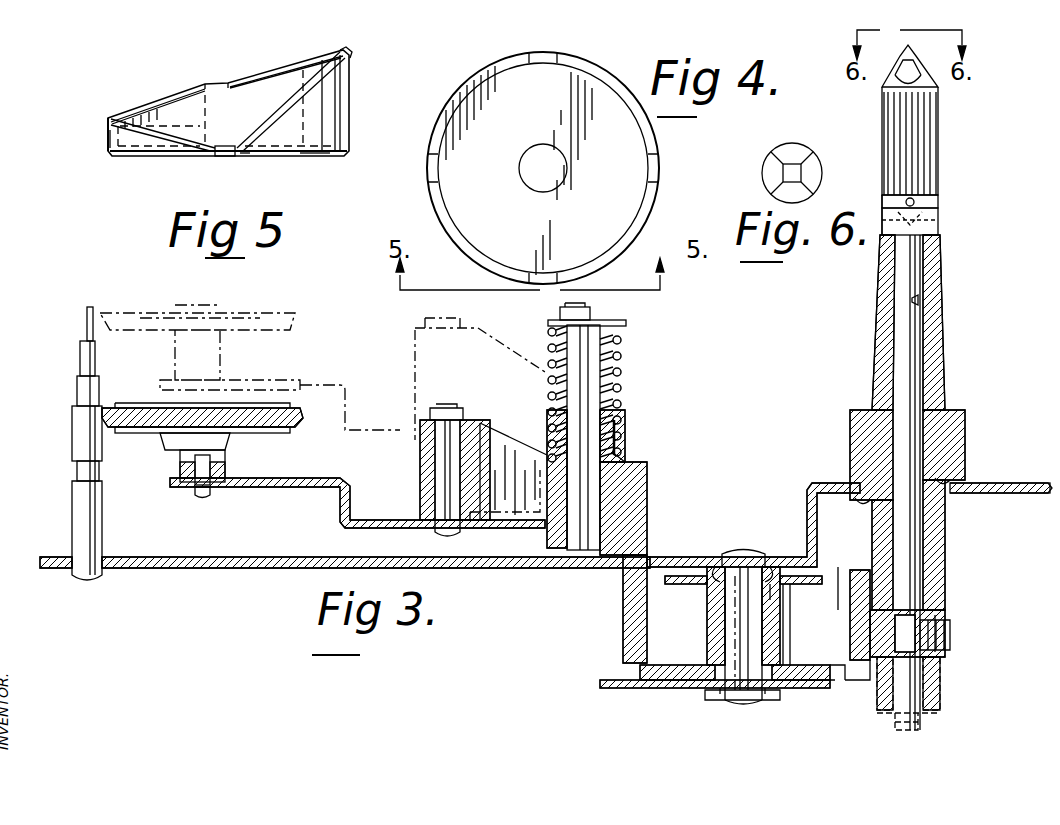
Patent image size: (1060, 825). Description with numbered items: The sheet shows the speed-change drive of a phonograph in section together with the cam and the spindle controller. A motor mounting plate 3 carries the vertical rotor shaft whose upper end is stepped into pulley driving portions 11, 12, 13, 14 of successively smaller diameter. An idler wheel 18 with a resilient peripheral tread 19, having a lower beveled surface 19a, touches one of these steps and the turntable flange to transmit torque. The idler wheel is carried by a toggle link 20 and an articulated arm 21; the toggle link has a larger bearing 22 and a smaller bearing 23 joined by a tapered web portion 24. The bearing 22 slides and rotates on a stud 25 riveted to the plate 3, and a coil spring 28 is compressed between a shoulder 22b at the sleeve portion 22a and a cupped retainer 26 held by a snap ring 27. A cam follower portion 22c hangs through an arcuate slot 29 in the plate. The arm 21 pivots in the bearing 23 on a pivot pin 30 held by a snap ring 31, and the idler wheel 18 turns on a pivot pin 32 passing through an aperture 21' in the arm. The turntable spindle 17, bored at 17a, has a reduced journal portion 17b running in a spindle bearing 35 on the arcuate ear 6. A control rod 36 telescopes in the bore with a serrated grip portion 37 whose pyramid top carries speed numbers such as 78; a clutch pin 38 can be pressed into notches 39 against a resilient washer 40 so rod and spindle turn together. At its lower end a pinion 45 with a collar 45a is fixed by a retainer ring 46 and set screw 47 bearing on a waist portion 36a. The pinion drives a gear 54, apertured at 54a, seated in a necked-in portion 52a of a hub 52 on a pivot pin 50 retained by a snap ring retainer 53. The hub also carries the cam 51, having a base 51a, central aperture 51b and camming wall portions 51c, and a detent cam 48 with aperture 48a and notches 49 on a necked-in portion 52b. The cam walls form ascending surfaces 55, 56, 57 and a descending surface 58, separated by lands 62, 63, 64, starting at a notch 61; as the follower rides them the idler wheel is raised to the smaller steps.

In FIG. 3, the motor mounting plate 3 is at (292, 568).
In FIG. 3, the arcuate ear 6 is at (998, 482).
In FIG. 3, the pulley driving portion 11 is at (72, 420).
In FIG. 3, the pulley driving portion 12 is at (77, 385).
In FIG. 3, the pulley driving portion 13 is at (80, 350).
In FIG. 3, the pulley driving portion 14 is at (87, 312).
In FIG. 3, the turntable spindle 17 is at (946, 330).
In FIG. 3, the bore 17a is at (918, 302).
In FIG. 3, the journal portion 17b is at (940, 450).
In FIG. 3, the idler wheel 18 is at (270, 436).
In FIG. 3, the resilient peripheral tread 19 is at (297, 418).
In FIG. 3, the beveled surface 19a is at (120, 430).
In FIG. 3, the toggle link 20 is at (648, 480).
In FIG. 3, the articulated arm 21 is at (357, 503).
In FIG. 3, the aperture 21' is at (202, 503).
In FIG. 3, the bearing 22 is at (625, 428).
In FIG. 3, the sleeve portion 22a is at (618, 420).
In FIG. 3, the shoulder 22b is at (620, 458).
In FIG. 3, the cam follower portion 22c is at (623, 610).
In FIG. 3, the bearing 23 is at (420, 460).
In FIG. 3, the web portion 24 is at (500, 450).
In FIG. 3, the stud 25 is at (590, 390).
In FIG. 3, the retainer 26 is at (626, 323).
In FIG. 3, the snap ring 27 is at (595, 315).
In FIG. 3, the coil spring 28 is at (622, 360).
In FIG. 3, the arcuate slot 29 is at (652, 557).
In FIG. 3, the pivot pin 30 is at (440, 486).
In FIG. 3, the snap ring 31 is at (432, 410).
In FIG. 3, the pivot pin 32 is at (180, 470).
In FIG. 3, the spindle bearing 35 is at (955, 405).
In FIG. 3, the control rod 36 is at (903, 315).
In FIG. 3, the reduced waist portion 36a is at (905, 635).
In FIG. 3, the grip portion 37 is at (925, 140).
In FIG. 3, the clutch pin 38 is at (938, 200).
In FIG. 3, the notches 39 is at (932, 225).
In FIG. 3, the resilient washer 40 is at (880, 215).
In FIG. 3, the pinion 45 is at (935, 680).
In FIG. 3, the collar 45a is at (860, 568).
In FIG. 3, the retainer ring 46 is at (945, 615).
In FIG. 3, the set screw 47 is at (955, 625).
In FIG. 3, the detent cam 48 is at (786, 600).
In FIG. 3, the aperture 48a is at (772, 576).
In FIG. 3, the peripheral notches 49 is at (680, 585).
In FIG. 3, the pivot pin 50 is at (742, 700).
In FIG. 5, the cam 51 is at (352, 92).
In FIG. 4, the cam 51 is at (540, 275).
In FIG. 3, the cam 51 is at (800, 690).
In FIG. 5, the base 51a is at (308, 156).
In FIG. 3, the base 51a is at (690, 665).
In FIG. 5, the aperture 51b is at (242, 156).
In FIG. 3, the aperture 51b is at (738, 675).
In FIG. 5, the camming wall portions 51c is at (108, 135).
In FIG. 3, the camming wall portions 51c is at (860, 662).
In FIG. 3, the hub 52 is at (707, 614).
In FIG. 3, the necked-in portion 52a is at (795, 665).
In FIG. 3, the necked-in portion 52b is at (705, 567).
In FIG. 3, the snap ring retainer 53 is at (712, 698).
In FIG. 3, the gear 54 is at (650, 688).
In FIG. 3, the aperture 54a is at (735, 700).
In FIG. 5, the cam surface 55 is at (168, 130).
In FIG. 4, the cam surface 55 is at (465, 250).
In FIG. 5, the cam surface 56 is at (155, 100).
In FIG. 4, the cam surface 56 is at (500, 60).
In FIG. 5, the cam surface 57 is at (262, 70).
In FIG. 4, the cam surface 57 is at (615, 82).
In FIG. 5, the cam surface 58 is at (305, 95).
In FIG. 4, the cam surface 58 is at (652, 218).
In FIG. 5, the notch 61 is at (222, 156).
In FIG. 5, the land surface 62 is at (110, 118).
In FIG. 4, the land surface 62 is at (427, 172).
In FIG. 5, the land 63 is at (220, 82).
In FIG. 4, the land 63 is at (542, 53).
In FIG. 5, the land 64 is at (346, 50).
In FIG. 4, the land 64 is at (660, 165).
In FIG. 6, the speed number 78 is at (770, 192).
In FIG. 3, the speed number 78 is at (938, 46).